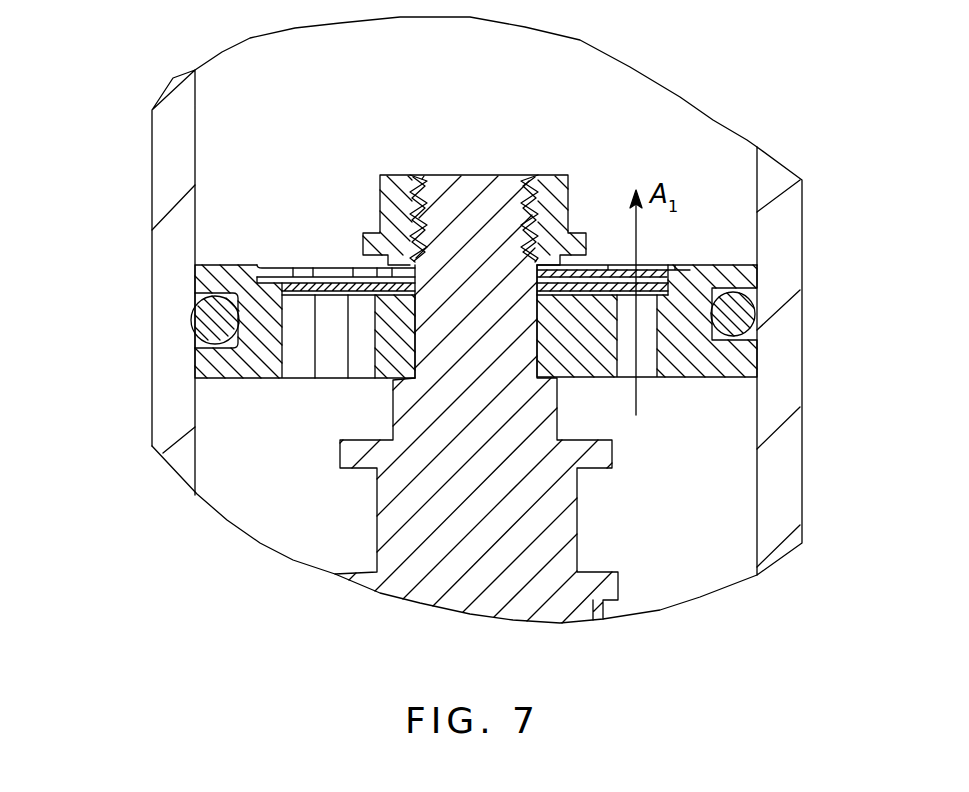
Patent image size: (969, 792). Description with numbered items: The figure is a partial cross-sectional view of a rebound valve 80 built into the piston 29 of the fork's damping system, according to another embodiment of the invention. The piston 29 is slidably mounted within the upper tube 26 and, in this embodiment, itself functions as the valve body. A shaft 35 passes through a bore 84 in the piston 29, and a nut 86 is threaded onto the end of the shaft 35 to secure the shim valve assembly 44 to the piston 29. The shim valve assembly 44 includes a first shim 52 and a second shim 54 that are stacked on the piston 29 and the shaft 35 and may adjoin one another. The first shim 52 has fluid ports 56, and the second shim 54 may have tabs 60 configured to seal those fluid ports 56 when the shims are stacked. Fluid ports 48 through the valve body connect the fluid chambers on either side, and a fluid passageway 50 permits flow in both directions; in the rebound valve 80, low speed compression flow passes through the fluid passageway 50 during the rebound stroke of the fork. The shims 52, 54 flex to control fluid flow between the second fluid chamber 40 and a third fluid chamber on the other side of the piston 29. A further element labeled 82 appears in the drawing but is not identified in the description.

The upper tube 26 is at (775, 264).
The piston 29 is at (227, 363).
The shaft 35 is at (557, 533).
The second fluid chamber 40 is at (702, 202).
The shim valve assembly 44 is at (305, 246).
The fluid ports 48 is at (300, 362).
The fluid passageway 50 is at (640, 358).
The first shim 52 is at (273, 275).
The second shim 54 is at (594, 290).
The fluid ports 56 is at (305, 268).
The tabs 60 is at (277, 283).
The rebound valve 80 is at (781, 330).
The housing wall portion 82 is at (720, 453).
The bore 84 is at (373, 380).
The nut 86 is at (547, 183).